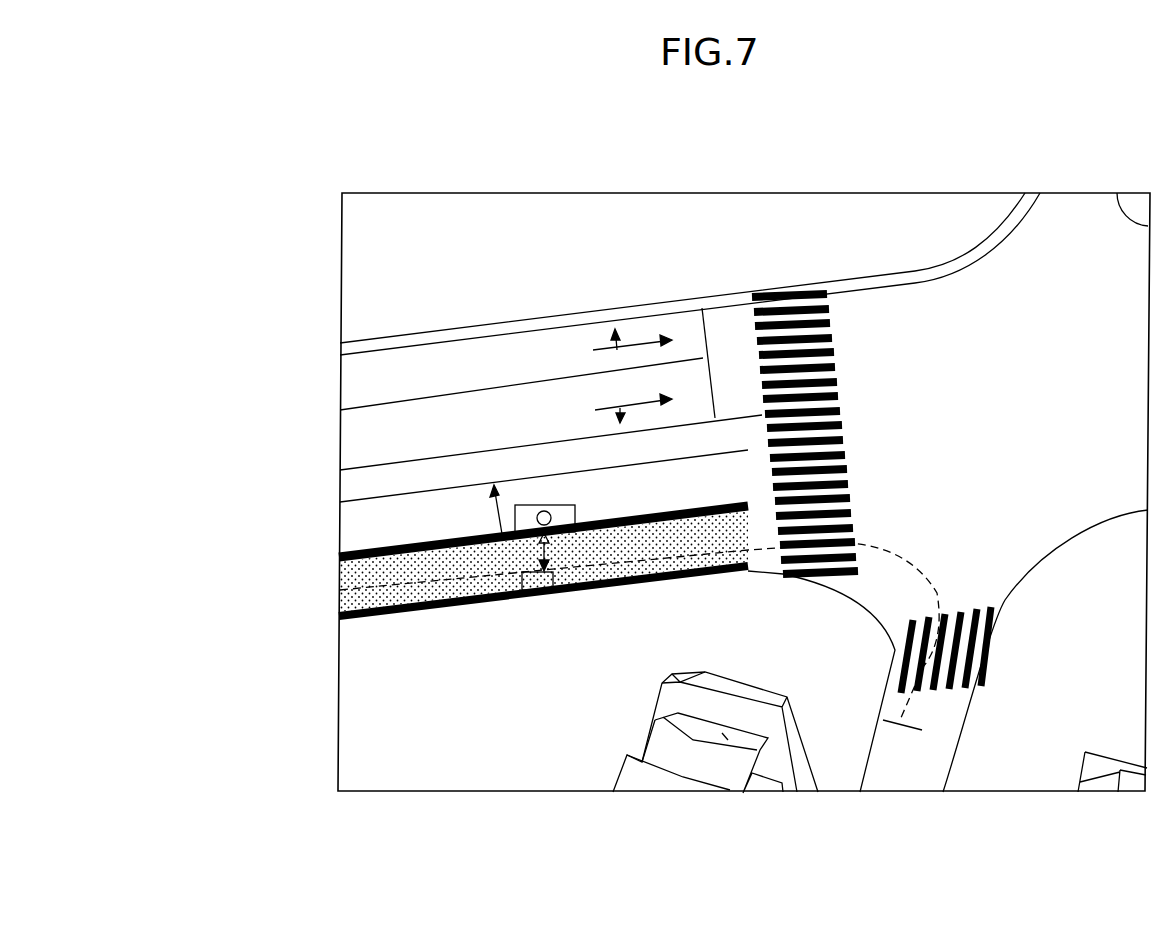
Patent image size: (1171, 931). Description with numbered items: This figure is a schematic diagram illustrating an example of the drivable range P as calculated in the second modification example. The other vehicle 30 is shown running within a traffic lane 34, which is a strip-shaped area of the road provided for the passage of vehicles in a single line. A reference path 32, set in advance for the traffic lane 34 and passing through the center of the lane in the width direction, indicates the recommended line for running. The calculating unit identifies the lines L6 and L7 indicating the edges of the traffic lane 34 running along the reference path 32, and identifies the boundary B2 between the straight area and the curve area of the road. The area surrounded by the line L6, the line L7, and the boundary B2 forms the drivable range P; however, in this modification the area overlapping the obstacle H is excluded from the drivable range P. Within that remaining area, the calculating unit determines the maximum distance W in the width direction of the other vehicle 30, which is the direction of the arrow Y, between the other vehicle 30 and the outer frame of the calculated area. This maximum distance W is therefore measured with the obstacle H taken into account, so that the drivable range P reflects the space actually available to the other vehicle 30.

The other vehicle 30 is at (544, 505).
The boundary B2 is at (748, 575).
The arrow indicating width direction Y is at (500, 503).
The line L7 is at (340, 555).
The line L6 is at (340, 615).
The reference path 32 is at (340, 571).
The traffic lane 34 is at (340, 597).
The drivable range P is at (412, 605).
The maximum distance W is at (542, 555).
The obstacle H is at (558, 580).